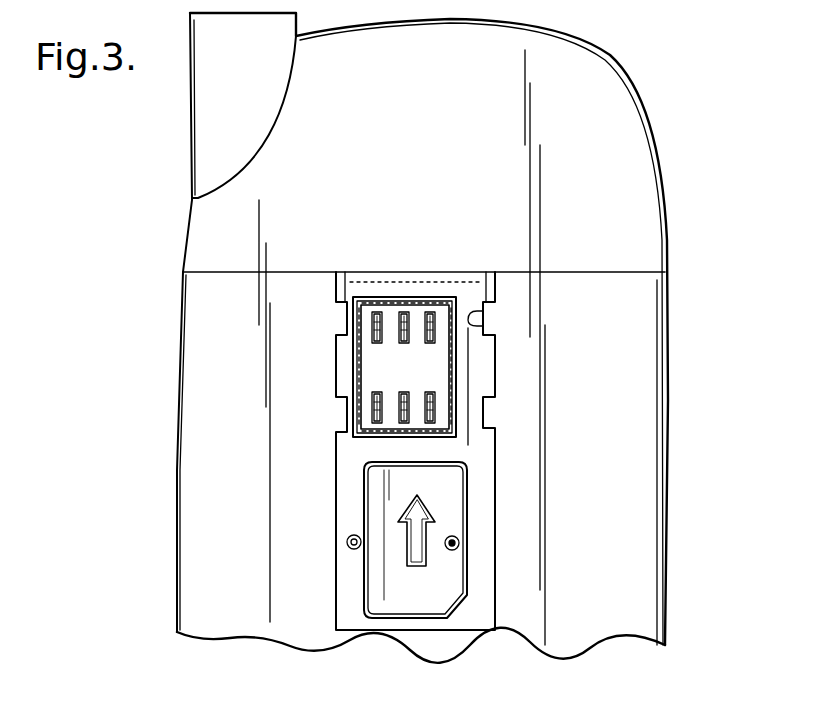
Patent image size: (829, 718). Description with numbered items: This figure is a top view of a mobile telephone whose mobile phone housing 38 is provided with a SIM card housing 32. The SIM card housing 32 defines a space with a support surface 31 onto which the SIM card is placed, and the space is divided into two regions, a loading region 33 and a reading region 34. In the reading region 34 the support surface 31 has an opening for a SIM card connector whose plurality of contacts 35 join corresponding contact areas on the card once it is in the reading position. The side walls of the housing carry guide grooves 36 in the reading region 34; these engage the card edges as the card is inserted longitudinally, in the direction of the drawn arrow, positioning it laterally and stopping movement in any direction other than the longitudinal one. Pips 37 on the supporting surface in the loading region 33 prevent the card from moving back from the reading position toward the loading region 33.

The support surface 31 is at (452, 518).
The SIM card housing 32 is at (500, 463).
The loading region 33 is at (362, 502).
The reading region 34 is at (388, 361).
The contacts 35 is at (380, 318).
The guide grooves 36 is at (481, 313).
The pips 37 is at (455, 545).
The mobile phone housing 38 is at (632, 228).